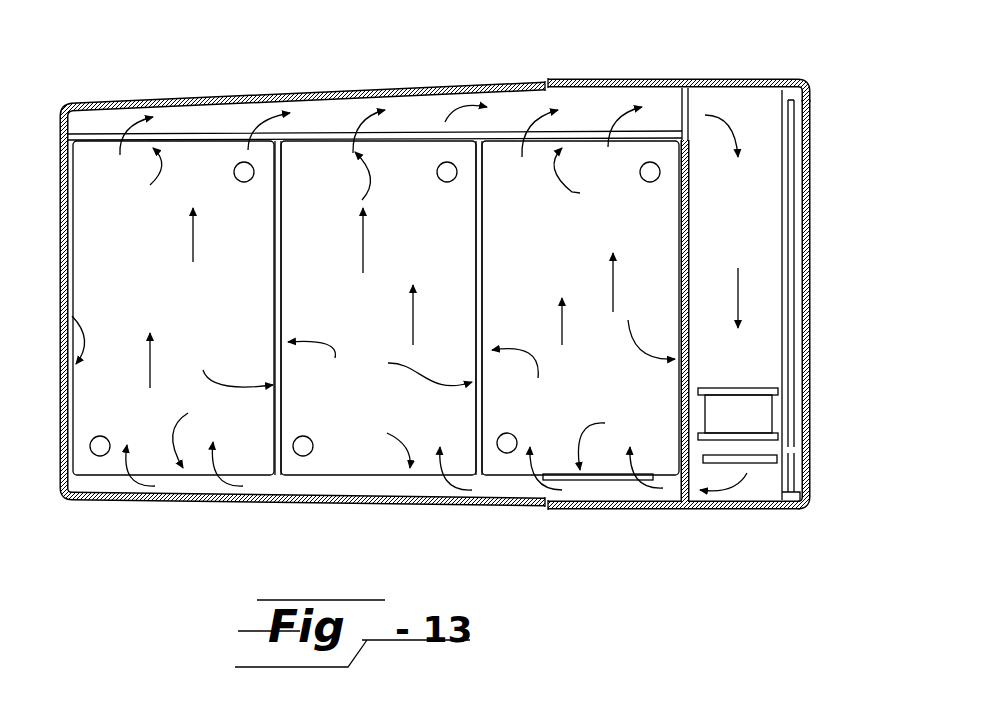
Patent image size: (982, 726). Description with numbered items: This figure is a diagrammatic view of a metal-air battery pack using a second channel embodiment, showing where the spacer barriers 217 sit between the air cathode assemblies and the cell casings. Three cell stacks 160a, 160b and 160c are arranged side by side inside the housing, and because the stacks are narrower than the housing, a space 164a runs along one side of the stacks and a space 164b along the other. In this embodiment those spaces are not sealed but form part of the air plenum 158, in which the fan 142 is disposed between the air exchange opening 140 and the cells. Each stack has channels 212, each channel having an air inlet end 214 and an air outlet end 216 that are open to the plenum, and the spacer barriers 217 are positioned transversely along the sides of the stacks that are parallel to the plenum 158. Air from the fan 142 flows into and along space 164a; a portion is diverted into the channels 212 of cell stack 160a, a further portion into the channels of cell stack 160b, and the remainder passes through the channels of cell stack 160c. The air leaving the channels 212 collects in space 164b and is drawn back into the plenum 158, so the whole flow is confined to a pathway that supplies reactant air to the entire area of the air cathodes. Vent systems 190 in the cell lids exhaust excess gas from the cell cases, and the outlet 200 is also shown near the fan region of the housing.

The space 164b is at (587, 110).
The space 164a is at (617, 487).
The air plenum 158 is at (758, 232).
The fan 142 is at (763, 390).
The air exchange opening 140 is at (793, 448).
The outlet vent 200 is at (778, 459).
The cell stack 160a is at (555, 255).
The cell stack 160b is at (428, 259).
The cell stack 160c is at (140, 259).
The vent system 190 is at (238, 180).
The air outlet end 216 is at (363, 184).
The spacer barrier 217 is at (72, 316).
The air inlet end 214 is at (394, 443).
The channel 212 is at (252, 462).